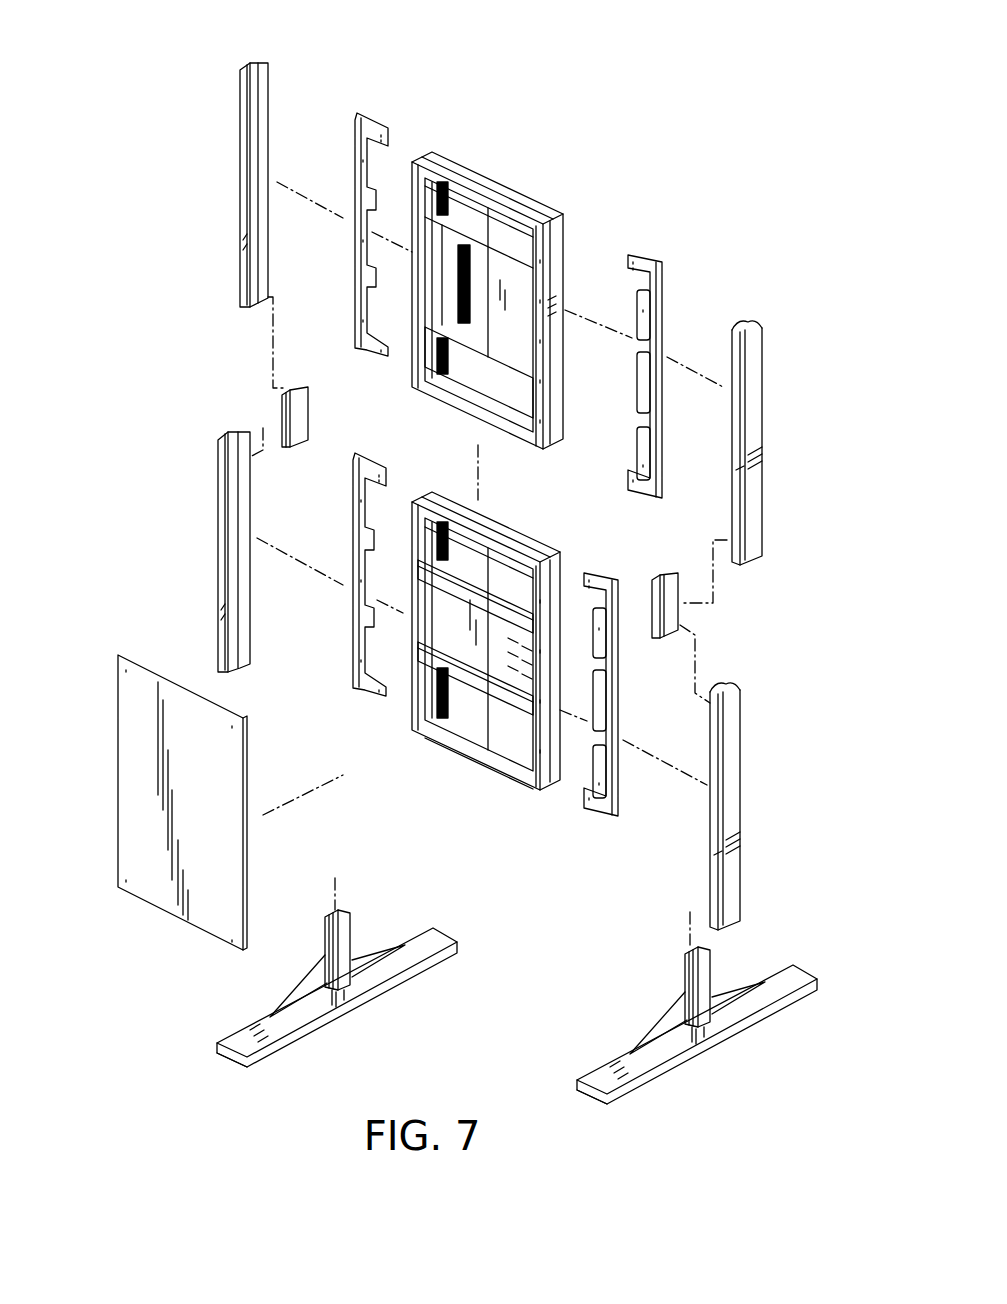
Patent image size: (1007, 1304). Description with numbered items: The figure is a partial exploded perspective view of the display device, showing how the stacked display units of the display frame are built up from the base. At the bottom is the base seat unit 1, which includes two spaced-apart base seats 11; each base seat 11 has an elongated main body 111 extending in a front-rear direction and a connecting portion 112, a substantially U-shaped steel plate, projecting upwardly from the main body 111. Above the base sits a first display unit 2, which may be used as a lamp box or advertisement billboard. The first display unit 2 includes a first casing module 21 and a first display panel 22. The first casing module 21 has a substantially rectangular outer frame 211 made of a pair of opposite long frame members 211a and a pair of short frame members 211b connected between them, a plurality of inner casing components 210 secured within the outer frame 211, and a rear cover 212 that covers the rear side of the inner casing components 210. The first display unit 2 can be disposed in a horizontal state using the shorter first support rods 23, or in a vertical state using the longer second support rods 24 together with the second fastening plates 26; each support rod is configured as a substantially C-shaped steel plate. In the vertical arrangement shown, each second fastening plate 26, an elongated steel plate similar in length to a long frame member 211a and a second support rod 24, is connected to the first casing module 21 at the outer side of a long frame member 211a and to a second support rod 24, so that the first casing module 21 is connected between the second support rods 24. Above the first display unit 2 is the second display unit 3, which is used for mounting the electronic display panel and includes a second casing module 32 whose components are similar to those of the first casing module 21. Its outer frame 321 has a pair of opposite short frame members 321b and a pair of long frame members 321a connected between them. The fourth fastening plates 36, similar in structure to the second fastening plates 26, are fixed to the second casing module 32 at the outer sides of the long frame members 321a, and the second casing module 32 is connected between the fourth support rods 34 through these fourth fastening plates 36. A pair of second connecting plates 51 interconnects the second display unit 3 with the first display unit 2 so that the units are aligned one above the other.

The base seat unit 1 is at (203, 998).
The base seat 11 is at (405, 1002).
The main body 111 is at (322, 1010).
The connecting portion 112 is at (338, 935).
The first display unit 2 is at (780, 780).
The first casing module 21 is at (542, 540).
The inner casing components 210 is at (512, 736).
The outer frame 211 is at (485, 530).
The long frame member 211a is at (412, 705).
The short frame member 211b is at (532, 520).
The rear cover 212 is at (565, 573).
The first display panel 22 is at (130, 770).
The first support rod 23 is at (472, 598).
The second support rod 24 is at (223, 524).
The second fastening plate 26 is at (352, 506).
The second display unit 3 is at (790, 383).
The second casing module 32 is at (528, 190).
The outer frame 321 is at (465, 180).
The long frame member 321a is at (550, 282).
The short frame member 321b is at (490, 192).
The fourth support rod 34 is at (243, 157).
The fourth fastening plate 36 is at (362, 122).
The second connecting plate 51 is at (310, 402).